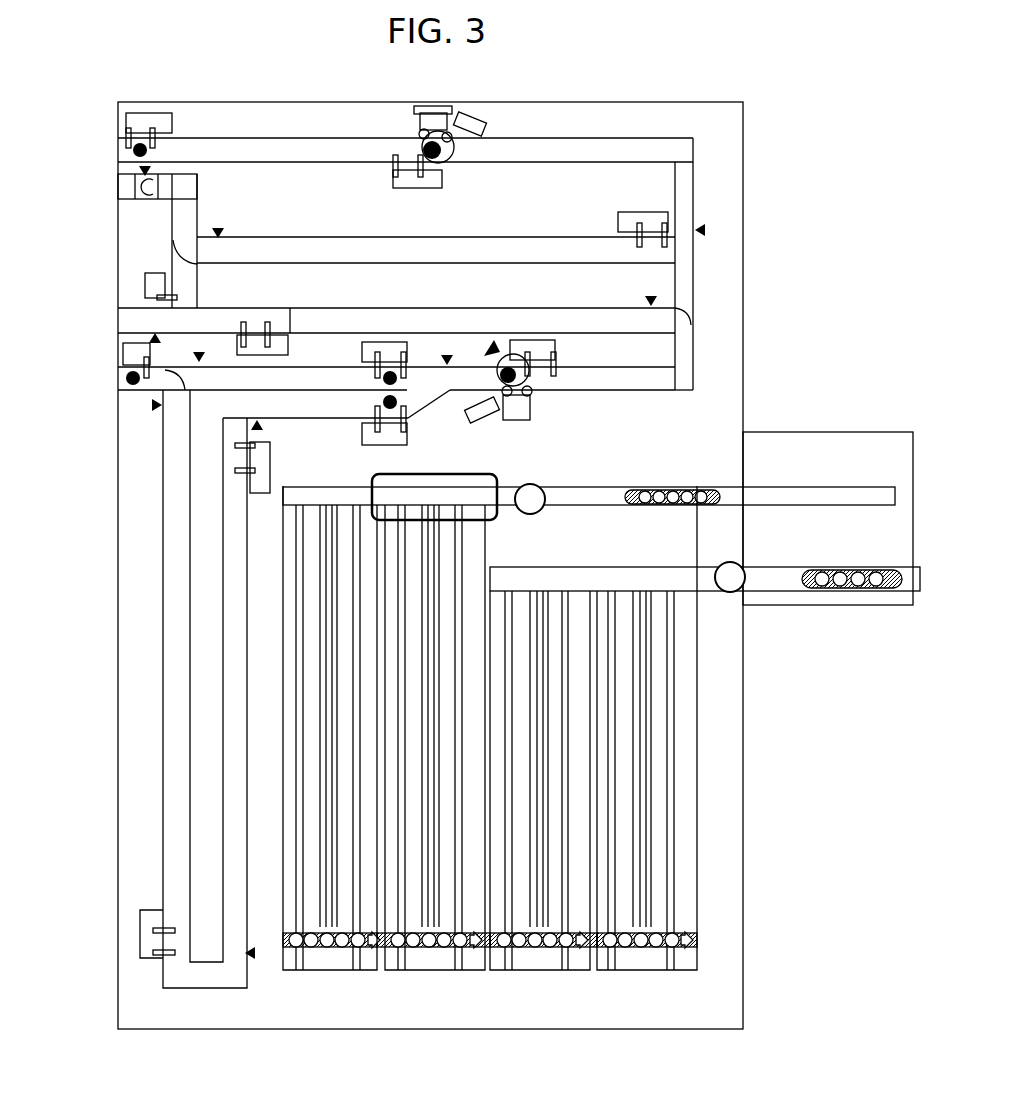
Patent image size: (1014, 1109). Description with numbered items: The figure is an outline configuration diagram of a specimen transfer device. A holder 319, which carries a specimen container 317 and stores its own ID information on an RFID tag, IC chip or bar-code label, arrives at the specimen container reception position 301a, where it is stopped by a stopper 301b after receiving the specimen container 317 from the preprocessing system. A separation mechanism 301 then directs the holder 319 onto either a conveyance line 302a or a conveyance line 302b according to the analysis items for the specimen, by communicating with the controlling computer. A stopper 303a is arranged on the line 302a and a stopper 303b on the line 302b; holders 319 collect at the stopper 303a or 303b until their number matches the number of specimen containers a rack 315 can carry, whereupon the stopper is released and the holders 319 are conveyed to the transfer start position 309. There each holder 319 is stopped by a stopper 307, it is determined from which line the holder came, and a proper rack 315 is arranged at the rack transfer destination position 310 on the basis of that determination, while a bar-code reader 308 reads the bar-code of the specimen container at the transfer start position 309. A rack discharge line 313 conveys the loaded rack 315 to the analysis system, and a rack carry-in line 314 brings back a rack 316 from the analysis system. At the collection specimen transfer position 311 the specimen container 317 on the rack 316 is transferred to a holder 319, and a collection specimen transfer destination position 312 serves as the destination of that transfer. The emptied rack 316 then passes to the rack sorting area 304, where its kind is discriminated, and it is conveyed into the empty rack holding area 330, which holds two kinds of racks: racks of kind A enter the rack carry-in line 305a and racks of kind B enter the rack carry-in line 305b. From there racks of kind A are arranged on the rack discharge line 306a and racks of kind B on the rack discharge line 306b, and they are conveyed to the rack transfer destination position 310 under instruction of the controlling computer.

The separation mechanism 301 is at (168, 372).
The specimen container reception position 301a is at (125, 370).
The stopper 301b is at (123, 352).
The conveyance line 302a is at (165, 565).
The conveyance line 302b is at (230, 375).
The stopper 303a is at (370, 422).
The stopper 303b is at (389, 355).
The rack sorting area 304 is at (447, 484).
The rack carry-in line 305a is at (432, 962).
The rack carry-in line 305b is at (325, 962).
The rack discharge line 306a is at (530, 962).
The rack discharge line 306b is at (638, 962).
The stopper 307 is at (560, 345).
The bar-code reader 308 is at (527, 393).
The transfer start position 309 is at (528, 380).
The rack transfer destination position 310 is at (722, 563).
The collection specimen transfer position 311 is at (538, 484).
The collection specimen transfer destination position 312 is at (447, 163).
The rack discharge line 313 is at (760, 575).
The rack carry-in line 314 is at (830, 475).
The rack 315 is at (805, 592).
The rack 316 is at (660, 506).
The specimen container 317 is at (650, 489).
The holder 319 is at (125, 385).
The empty rack holding area 330 is at (710, 769).